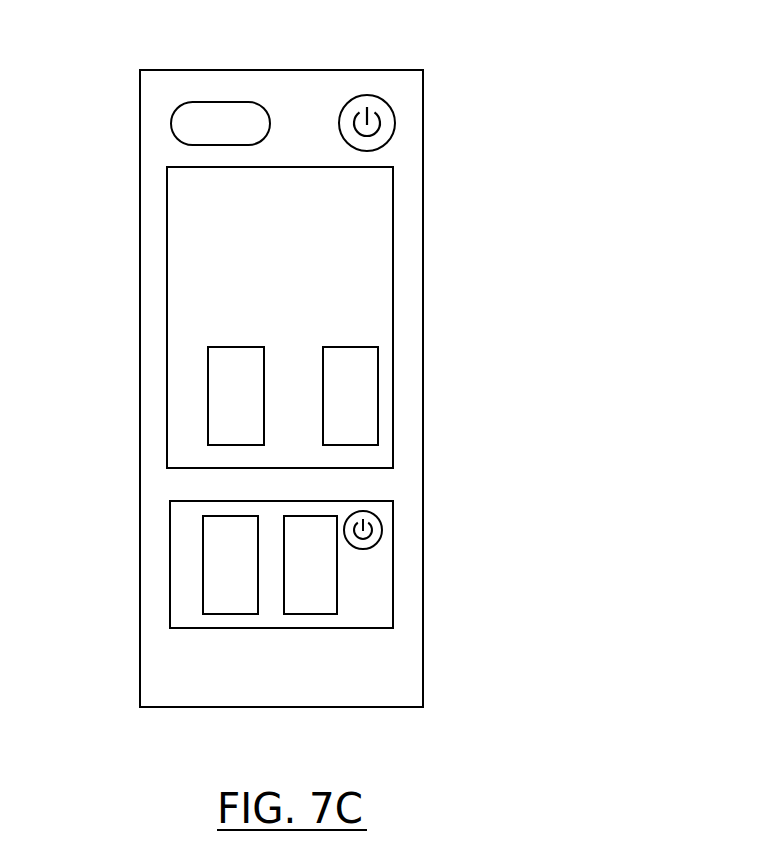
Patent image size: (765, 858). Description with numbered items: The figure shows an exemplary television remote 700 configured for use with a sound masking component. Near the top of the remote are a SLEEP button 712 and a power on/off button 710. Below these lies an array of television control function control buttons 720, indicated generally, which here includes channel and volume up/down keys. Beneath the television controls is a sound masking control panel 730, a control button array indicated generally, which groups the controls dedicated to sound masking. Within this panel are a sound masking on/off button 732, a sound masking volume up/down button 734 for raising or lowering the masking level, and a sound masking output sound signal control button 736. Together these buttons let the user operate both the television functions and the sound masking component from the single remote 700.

The television remote 700 is at (463, 156).
The power on/off button 710 is at (385, 100).
The SLEEP button 712 is at (222, 102).
The array of television control function control buttons 720 is at (395, 342).
The sound masking control panel 730 is at (393, 563).
The sound masking on/off button 732 is at (383, 526).
The sound masking volume up/down button 734 is at (337, 595).
The sound masking output sound signal control button 736 is at (203, 580).